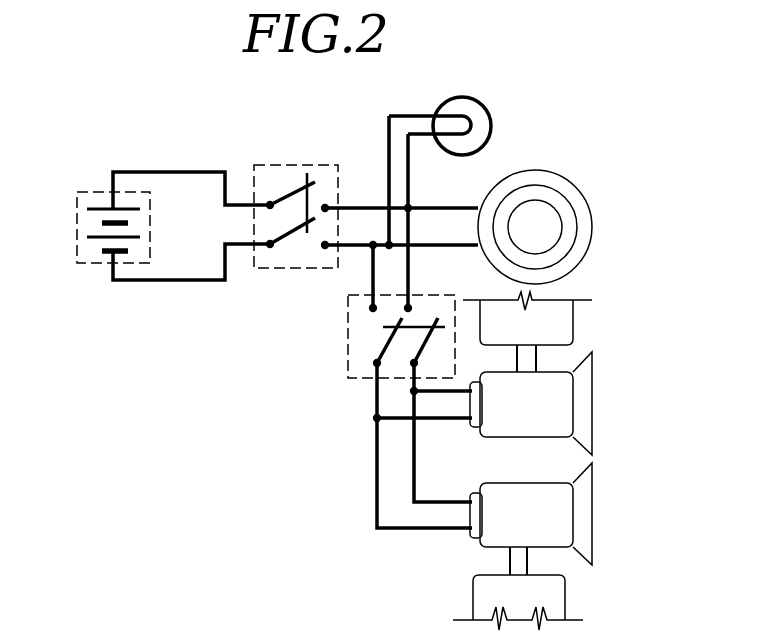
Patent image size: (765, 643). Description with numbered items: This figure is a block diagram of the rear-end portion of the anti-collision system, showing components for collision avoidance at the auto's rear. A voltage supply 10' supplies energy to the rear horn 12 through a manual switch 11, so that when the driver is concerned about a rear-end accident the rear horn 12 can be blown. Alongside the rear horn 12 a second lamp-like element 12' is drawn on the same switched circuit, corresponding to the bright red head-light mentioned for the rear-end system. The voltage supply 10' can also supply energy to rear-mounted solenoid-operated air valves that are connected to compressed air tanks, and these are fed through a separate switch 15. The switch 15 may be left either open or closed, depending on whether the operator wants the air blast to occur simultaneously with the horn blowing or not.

The voltage supply 10' is at (156, 218).
The manual switch 11 is at (302, 165).
The rear horn 12 is at (537, 214).
The indicator lamp 12' is at (459, 198).
The switch 15 is at (348, 335).